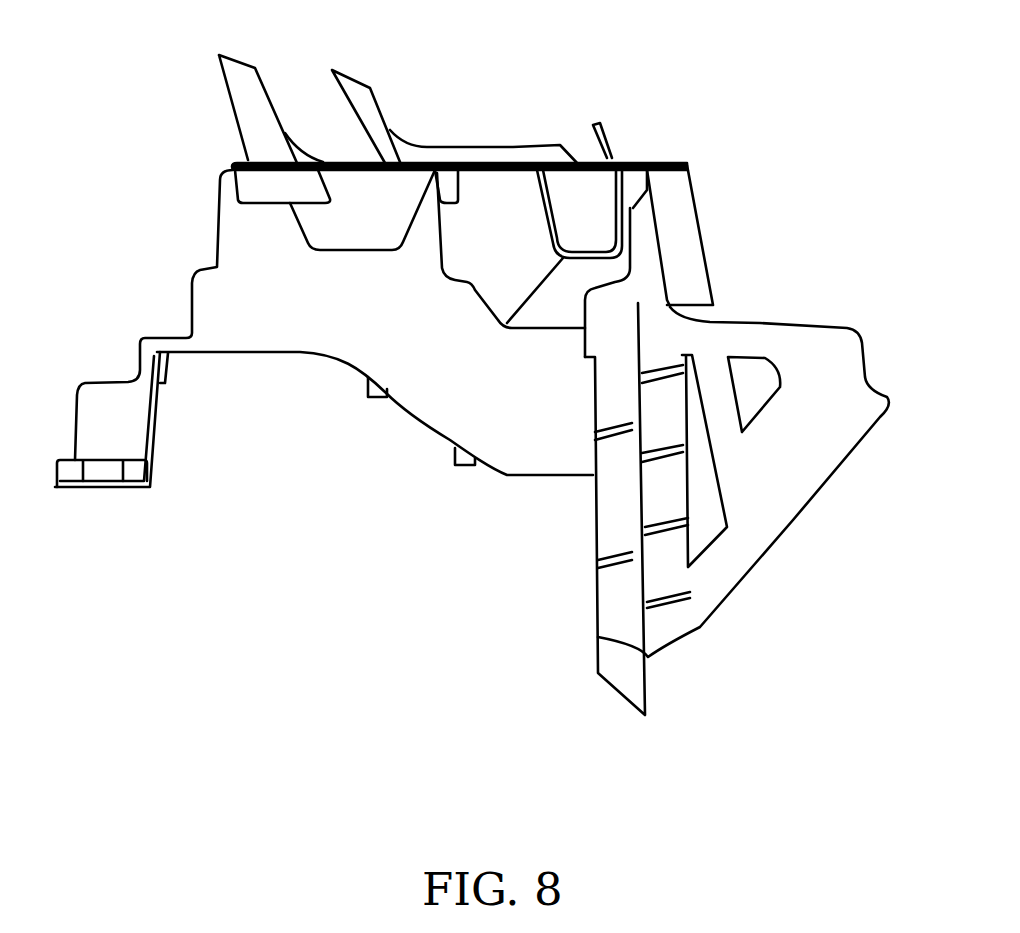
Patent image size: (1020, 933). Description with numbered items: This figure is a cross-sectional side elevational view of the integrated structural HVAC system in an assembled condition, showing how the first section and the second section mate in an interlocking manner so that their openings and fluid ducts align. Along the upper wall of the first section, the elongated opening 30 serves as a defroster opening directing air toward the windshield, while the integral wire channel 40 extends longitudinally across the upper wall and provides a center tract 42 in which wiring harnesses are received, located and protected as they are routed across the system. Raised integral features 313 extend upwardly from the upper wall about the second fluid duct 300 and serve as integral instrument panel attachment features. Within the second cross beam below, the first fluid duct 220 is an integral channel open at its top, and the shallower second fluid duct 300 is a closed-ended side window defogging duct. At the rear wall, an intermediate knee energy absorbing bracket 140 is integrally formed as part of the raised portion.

The elongated opening 30 is at (343, 160).
The raised integral features 313 is at (275, 70).
The center tract 42 is at (582, 158).
The integral wire channel 40 is at (576, 108).
The second fluid duct 300 is at (322, 218).
The first fluid duct 220 is at (565, 258).
The intermediate knee energy absorbing bracket 140 is at (784, 444).